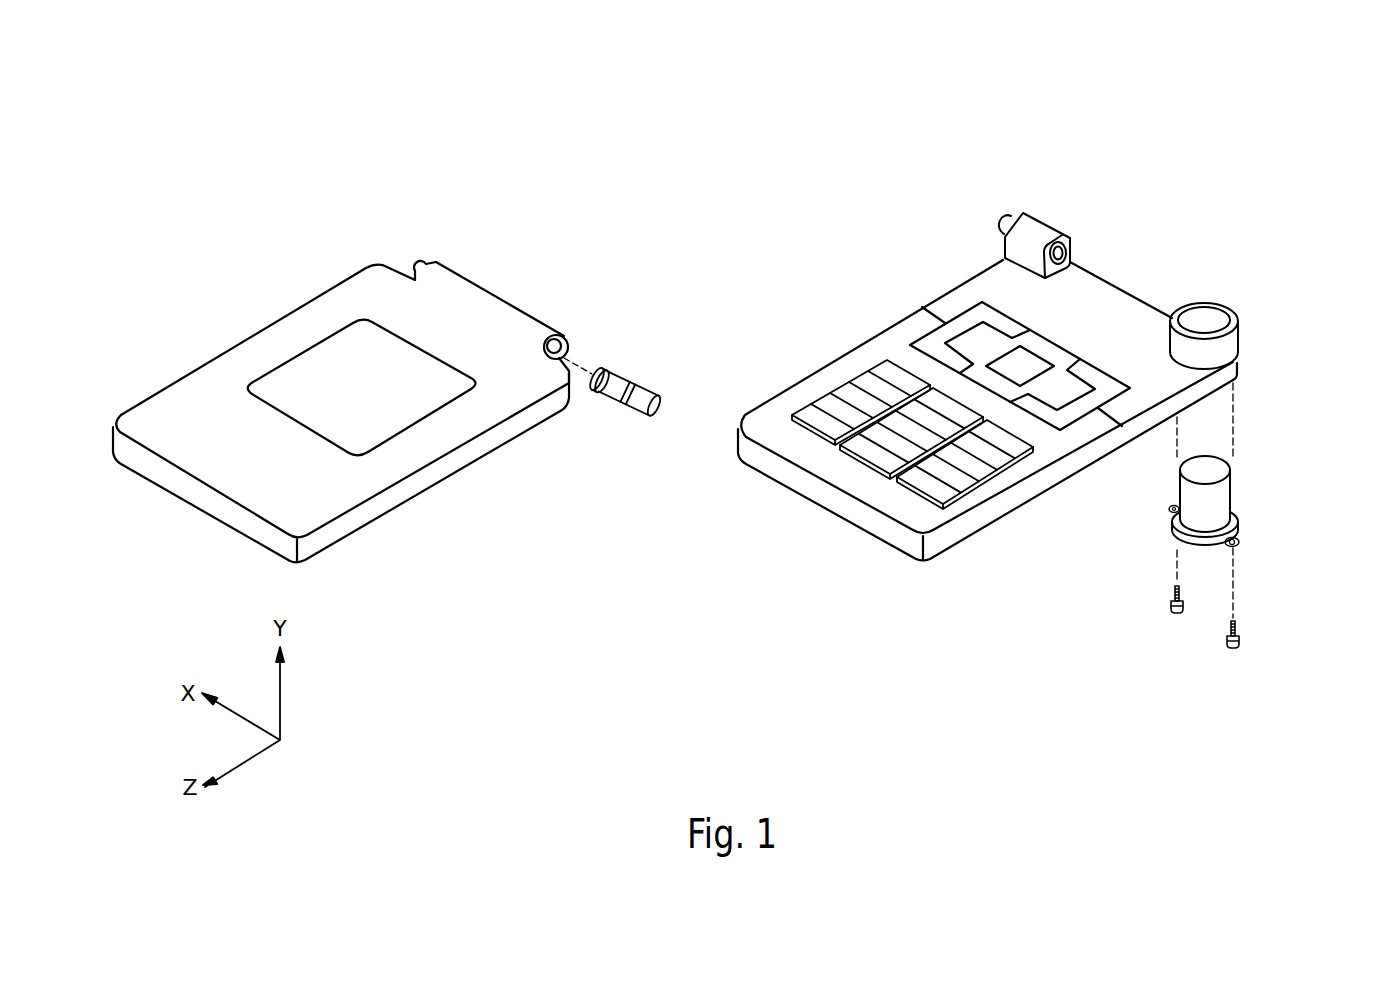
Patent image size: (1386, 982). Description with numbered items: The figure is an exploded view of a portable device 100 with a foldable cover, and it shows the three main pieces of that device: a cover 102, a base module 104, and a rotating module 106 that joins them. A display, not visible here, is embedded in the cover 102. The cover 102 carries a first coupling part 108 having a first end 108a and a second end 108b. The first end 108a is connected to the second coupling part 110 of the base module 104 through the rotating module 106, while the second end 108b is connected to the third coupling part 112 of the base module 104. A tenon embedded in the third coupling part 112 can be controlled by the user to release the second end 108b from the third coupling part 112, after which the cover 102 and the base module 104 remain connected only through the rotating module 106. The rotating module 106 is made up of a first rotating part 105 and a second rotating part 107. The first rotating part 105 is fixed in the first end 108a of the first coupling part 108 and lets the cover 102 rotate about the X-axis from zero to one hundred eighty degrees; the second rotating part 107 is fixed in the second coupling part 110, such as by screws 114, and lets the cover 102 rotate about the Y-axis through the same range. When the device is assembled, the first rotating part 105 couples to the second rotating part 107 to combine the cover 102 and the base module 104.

The portable device 100 is at (257, 99).
The cover 102 is at (237, 352).
The base module 104 is at (883, 340).
The first rotating part 105 is at (637, 380).
The rotating module 106 is at (1312, 267).
The second rotating part 107 is at (1212, 470).
The first coupling part 108 is at (535, 225).
The first end 108a is at (566, 337).
The second end 108b is at (420, 264).
The second coupling part 110 is at (1215, 318).
The third coupling part 112 is at (1040, 228).
The screws 114 is at (1168, 602).